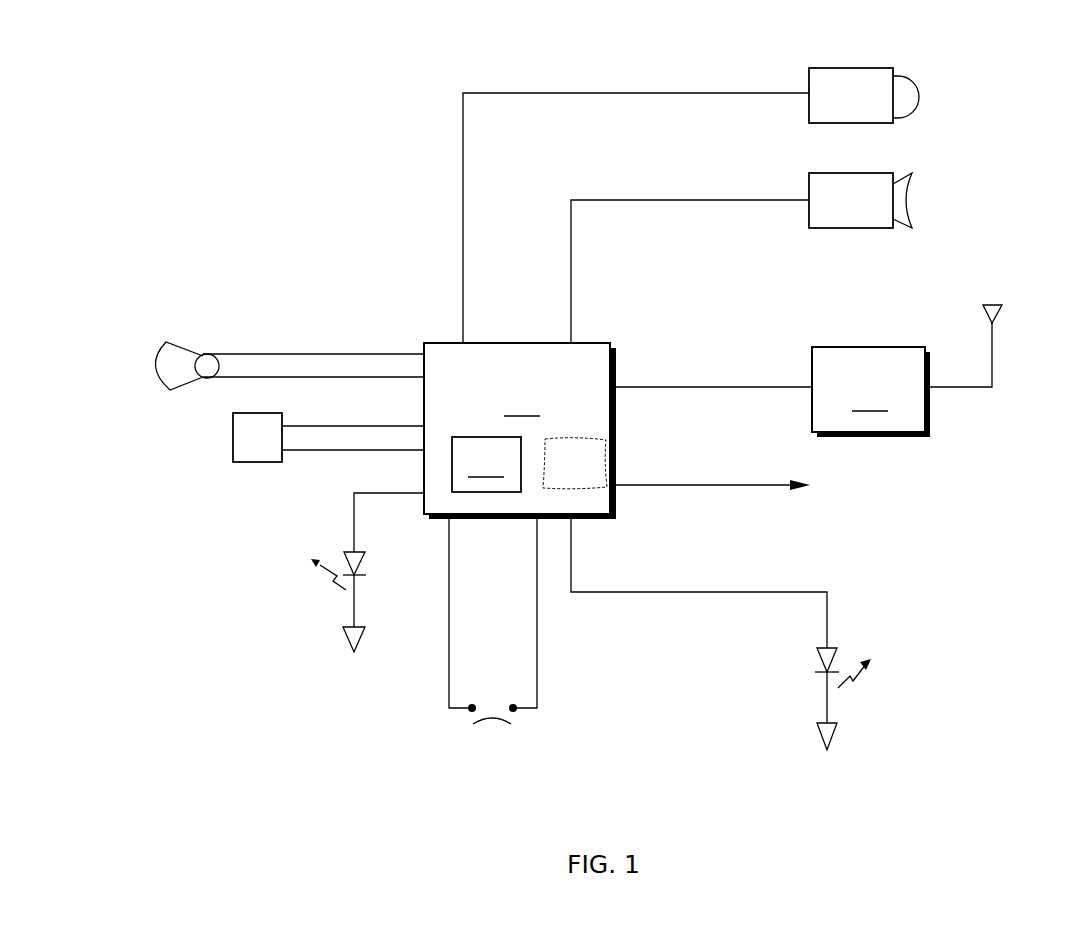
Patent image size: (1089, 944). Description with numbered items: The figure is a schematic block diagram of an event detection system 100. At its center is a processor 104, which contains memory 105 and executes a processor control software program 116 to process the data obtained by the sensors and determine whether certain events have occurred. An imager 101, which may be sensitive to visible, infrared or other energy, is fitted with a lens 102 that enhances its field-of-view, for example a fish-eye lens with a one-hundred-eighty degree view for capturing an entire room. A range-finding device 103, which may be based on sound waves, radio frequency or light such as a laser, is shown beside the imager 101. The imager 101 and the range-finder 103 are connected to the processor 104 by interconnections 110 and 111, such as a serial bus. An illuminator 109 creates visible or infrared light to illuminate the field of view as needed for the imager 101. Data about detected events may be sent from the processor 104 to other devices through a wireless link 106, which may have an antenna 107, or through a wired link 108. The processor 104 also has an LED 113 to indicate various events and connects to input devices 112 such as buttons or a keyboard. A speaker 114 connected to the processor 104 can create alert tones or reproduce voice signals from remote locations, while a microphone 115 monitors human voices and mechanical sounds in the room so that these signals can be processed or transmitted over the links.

The event detection system 100 is at (250, 76).
The imager 101 is at (825, 72).
The lens 102 is at (920, 95).
The range-finding device 103 is at (818, 173).
The processor 104 is at (520, 431).
The memory 105 is at (486, 464).
The wireless link 106 is at (773, 392).
The antenna 107 is at (1002, 310).
The wired link 108 is at (728, 483).
The illuminator 109 is at (833, 652).
The interconnection 110 is at (615, 93).
The interconnection 111 is at (615, 200).
The input devices 112 is at (483, 722).
The LED 113 is at (350, 556).
The speaker 114 is at (255, 352).
The microphone 115 is at (233, 435).
The processor control software program 116 is at (575, 463).